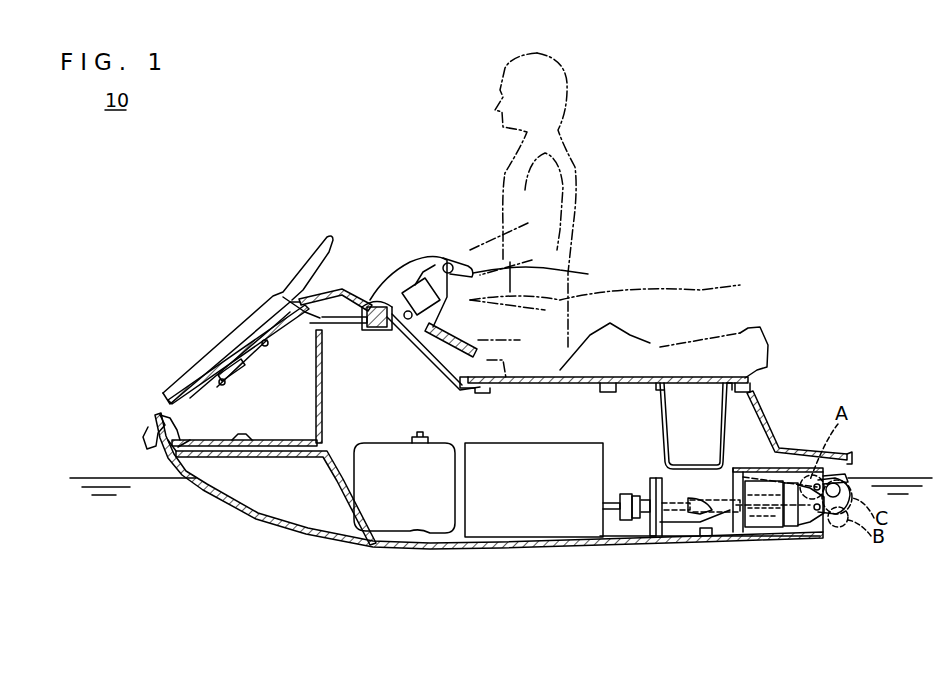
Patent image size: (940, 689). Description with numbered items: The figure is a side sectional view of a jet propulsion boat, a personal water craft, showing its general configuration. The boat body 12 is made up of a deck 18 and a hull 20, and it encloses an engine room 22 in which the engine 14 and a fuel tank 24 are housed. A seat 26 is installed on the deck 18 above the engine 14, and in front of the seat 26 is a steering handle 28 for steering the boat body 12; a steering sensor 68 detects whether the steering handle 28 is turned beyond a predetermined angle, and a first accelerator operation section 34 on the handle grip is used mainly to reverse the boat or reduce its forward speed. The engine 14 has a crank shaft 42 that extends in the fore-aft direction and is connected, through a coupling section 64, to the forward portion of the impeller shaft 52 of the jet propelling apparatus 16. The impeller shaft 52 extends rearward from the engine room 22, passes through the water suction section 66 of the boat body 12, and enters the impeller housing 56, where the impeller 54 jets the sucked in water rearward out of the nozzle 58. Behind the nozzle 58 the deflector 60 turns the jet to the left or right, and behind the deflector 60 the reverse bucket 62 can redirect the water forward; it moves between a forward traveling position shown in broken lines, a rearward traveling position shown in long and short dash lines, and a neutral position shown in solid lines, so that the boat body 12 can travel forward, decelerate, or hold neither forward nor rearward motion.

The boat body 12 is at (200, 512).
The engine 14 is at (525, 513).
The jet propelling apparatus 16 is at (785, 482).
The deck 18 is at (160, 410).
The hull 20 is at (253, 518).
The engine room 22 is at (537, 420).
The fuel tank 24 is at (402, 512).
The seat 26 is at (641, 347).
The steering handle 28 is at (460, 252).
The first accelerator operation section 34 is at (588, 274).
The crank shaft 42 is at (607, 520).
The impeller shaft 52 is at (701, 462).
The impeller 54 is at (757, 512).
The impeller housing 56 is at (775, 512).
The nozzle 58 is at (800, 508).
The deflector 60 is at (815, 518).
The reverse bucket 62 is at (840, 474).
The coupling section 64 is at (620, 527).
The water suction section 66 is at (715, 517).
The steering sensor 68 is at (405, 313).